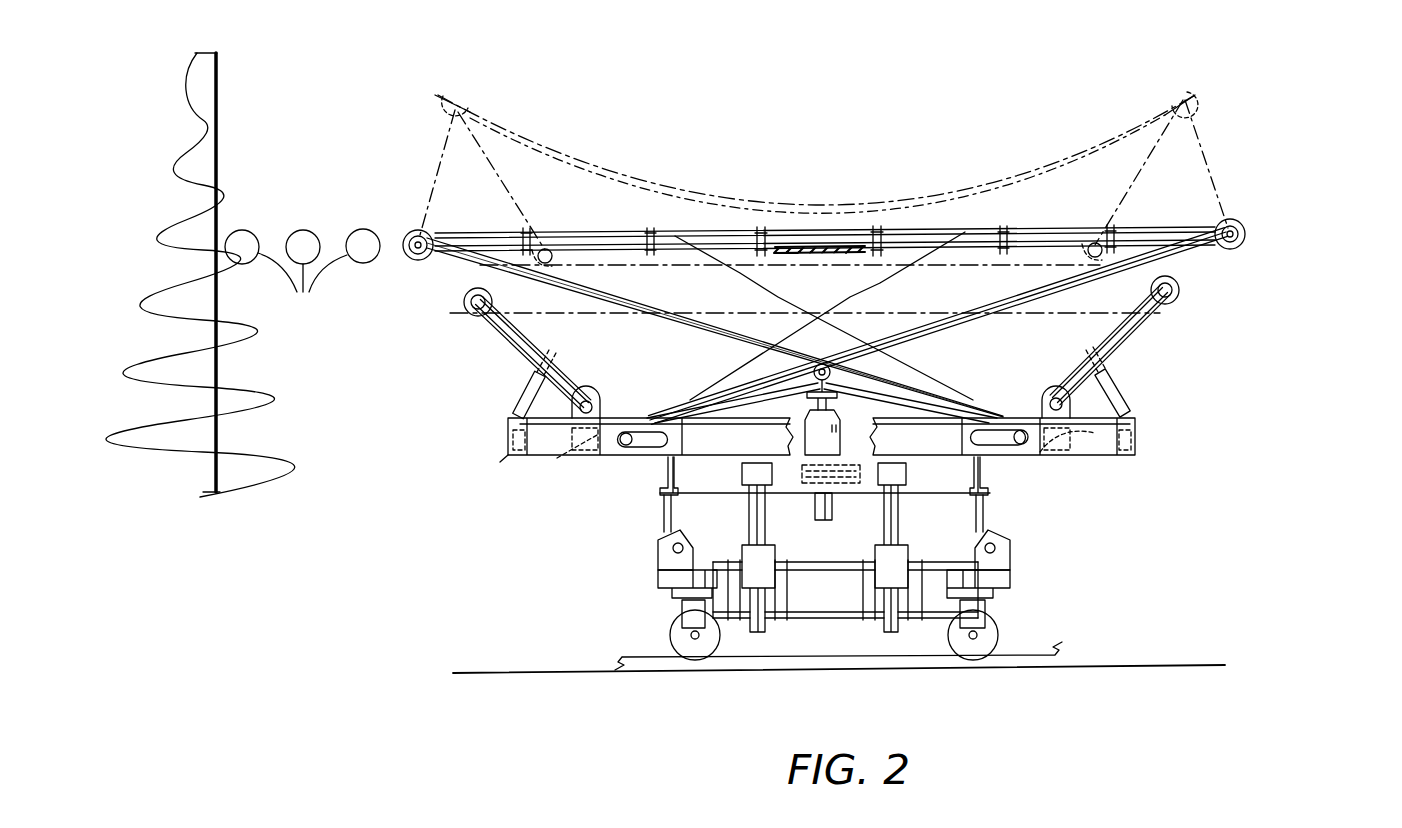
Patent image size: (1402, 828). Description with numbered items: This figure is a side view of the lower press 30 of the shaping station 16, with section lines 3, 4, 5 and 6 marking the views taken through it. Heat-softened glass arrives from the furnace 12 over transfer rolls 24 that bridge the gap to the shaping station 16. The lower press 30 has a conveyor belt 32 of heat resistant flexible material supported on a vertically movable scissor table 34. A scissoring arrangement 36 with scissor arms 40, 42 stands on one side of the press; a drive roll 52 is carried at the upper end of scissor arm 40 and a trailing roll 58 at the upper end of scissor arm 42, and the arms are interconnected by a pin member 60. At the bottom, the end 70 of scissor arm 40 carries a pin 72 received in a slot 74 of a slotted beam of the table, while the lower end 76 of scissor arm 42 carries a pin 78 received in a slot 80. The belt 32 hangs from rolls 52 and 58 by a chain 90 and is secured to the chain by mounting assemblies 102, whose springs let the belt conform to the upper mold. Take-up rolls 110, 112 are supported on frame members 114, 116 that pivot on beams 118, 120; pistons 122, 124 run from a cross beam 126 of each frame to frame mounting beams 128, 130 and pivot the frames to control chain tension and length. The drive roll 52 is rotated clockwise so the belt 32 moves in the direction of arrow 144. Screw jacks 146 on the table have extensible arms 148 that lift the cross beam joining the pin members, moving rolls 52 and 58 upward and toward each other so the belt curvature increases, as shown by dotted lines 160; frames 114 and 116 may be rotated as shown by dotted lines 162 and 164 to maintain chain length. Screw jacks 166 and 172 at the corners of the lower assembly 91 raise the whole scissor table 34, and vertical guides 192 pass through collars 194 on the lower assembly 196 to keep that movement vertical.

The furnace 12 is at (238, 115).
The shaping station 16 is at (824, 201).
The transfer rolls 24 is at (302, 273).
The lower press 30 is at (807, 442).
The conveyor belt 32 is at (834, 252).
The scissor table 34 is at (515, 457).
The scissoring arrangement 36 is at (932, 348).
The scissor arm 40 is at (1025, 285).
The scissor arm 42 is at (630, 295).
The drive roll 52 is at (1246, 239).
The trailing roll 58 is at (410, 259).
The pin member 60 is at (822, 363).
The end of scissor arm 70 is at (726, 398).
The pin 72 is at (666, 472).
The slot 74 is at (647, 465).
The lower end of scissor arm 76 is at (960, 405).
The pin 78 is at (1024, 443).
The slot 80 is at (996, 447).
The chain 90 is at (914, 230).
The lower assembly 91 is at (663, 490).
The mounting assemblies 102 is at (660, 232).
The take-up roll 110 is at (1180, 288).
The take-up roll 112 is at (463, 299).
The frame member 114 is at (1115, 333).
The frame member 116 is at (548, 350).
The beam 118 is at (1106, 452).
The beam 120 is at (560, 455).
The piston 122 is at (1112, 392).
The piston 124 is at (818, 374).
The cross beam 126 is at (515, 357).
The frame mounting beam 128 is at (1140, 437).
The frame mounting beam 130 is at (512, 440).
The arrow 144 is at (1083, 202).
The screw jacks 146 is at (838, 447).
The extensible arms 148 is at (814, 401).
The dotted lines 160 is at (525, 138).
The dotted lines 162 is at (1087, 243).
The dotted lines 164 is at (548, 248).
The screw jack 166 is at (658, 553).
The screw jack 172 is at (1008, 550).
The vertical guides 192 is at (882, 520).
The collars 194 is at (766, 482).
The lower assembly 196 is at (700, 494).
The section line 3- 3 is at (1346, 68).
The section line 4- 4 is at (350, 203).
The section line 5- 5 is at (562, 541).
The section line 6- 6 is at (443, 395).